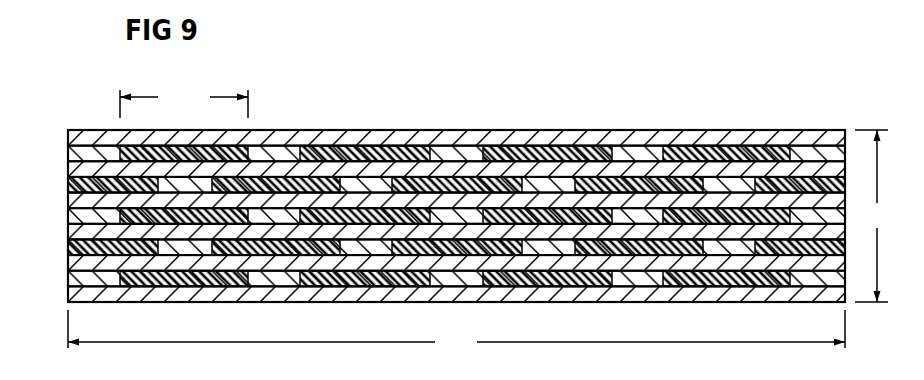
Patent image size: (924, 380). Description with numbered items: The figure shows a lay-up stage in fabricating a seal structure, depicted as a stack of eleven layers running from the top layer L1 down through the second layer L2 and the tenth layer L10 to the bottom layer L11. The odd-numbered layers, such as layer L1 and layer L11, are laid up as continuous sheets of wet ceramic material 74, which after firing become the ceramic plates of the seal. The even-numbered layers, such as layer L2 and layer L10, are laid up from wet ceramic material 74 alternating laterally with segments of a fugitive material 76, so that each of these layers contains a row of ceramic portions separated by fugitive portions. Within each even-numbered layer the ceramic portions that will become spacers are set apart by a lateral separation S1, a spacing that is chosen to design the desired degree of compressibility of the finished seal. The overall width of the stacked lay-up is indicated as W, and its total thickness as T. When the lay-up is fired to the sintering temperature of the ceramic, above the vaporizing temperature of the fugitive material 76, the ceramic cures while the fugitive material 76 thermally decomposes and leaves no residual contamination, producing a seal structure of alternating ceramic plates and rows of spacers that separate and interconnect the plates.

The wet ceramic material 74 is at (460, 152).
The fugitive material 76 is at (535, 152).
The layer L1 is at (68, 139).
The layer L2 is at (68, 154).
The layer L10 is at (68, 278).
The layer L11 is at (68, 293).
The lateral separation S1 is at (184, 101).
The width W is at (456, 332).
The thickness T is at (871, 216).